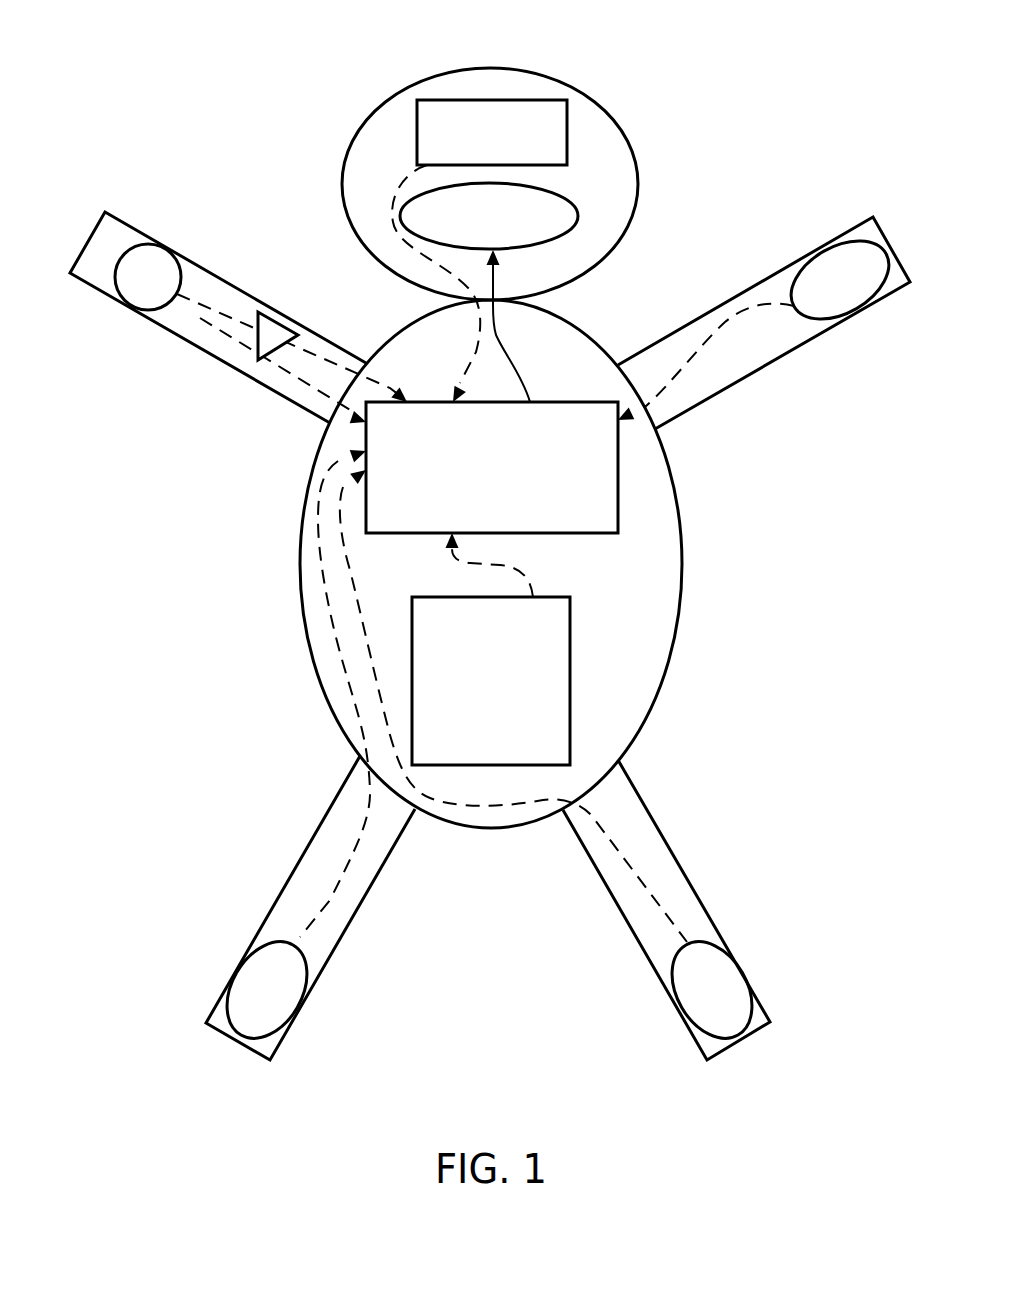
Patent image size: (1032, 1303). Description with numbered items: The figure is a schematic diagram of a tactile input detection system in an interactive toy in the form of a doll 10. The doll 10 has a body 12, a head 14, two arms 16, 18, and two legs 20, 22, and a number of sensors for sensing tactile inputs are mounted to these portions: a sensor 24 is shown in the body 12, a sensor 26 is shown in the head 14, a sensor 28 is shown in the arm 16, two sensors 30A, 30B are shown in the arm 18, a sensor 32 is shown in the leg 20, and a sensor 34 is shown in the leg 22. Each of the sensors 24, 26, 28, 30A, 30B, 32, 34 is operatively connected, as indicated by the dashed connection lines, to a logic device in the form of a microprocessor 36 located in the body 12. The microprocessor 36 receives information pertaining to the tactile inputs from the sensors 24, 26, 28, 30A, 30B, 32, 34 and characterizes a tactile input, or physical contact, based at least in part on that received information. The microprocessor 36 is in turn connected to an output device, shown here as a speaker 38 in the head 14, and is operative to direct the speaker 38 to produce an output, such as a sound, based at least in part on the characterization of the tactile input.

The doll 10 is at (135, 110).
The body 12 is at (330, 648).
The head 14 is at (397, 122).
The arm 16 is at (745, 360).
The arm 18 is at (183, 327).
The leg 20 is at (660, 870).
The leg 22 is at (308, 882).
The sensor 24 is at (555, 648).
The sensor 26 is at (543, 130).
The sensor 28 is at (838, 290).
The sensor 30A is at (143, 280).
The sensor 30B is at (272, 335).
The sensor 32 is at (712, 965).
The sensor 34 is at (270, 978).
The microprocessor 36 is at (597, 470).
The speaker 38 is at (560, 215).